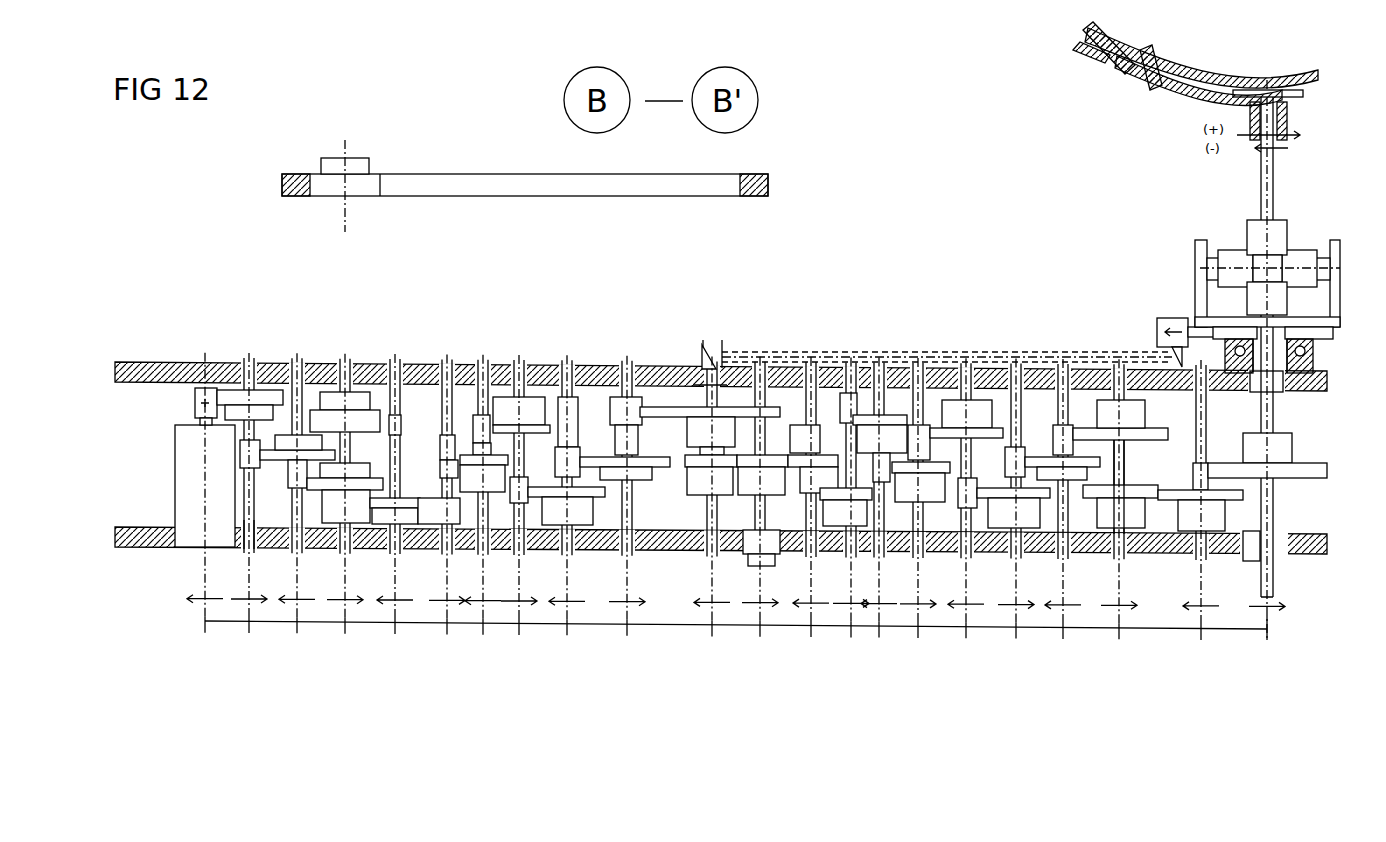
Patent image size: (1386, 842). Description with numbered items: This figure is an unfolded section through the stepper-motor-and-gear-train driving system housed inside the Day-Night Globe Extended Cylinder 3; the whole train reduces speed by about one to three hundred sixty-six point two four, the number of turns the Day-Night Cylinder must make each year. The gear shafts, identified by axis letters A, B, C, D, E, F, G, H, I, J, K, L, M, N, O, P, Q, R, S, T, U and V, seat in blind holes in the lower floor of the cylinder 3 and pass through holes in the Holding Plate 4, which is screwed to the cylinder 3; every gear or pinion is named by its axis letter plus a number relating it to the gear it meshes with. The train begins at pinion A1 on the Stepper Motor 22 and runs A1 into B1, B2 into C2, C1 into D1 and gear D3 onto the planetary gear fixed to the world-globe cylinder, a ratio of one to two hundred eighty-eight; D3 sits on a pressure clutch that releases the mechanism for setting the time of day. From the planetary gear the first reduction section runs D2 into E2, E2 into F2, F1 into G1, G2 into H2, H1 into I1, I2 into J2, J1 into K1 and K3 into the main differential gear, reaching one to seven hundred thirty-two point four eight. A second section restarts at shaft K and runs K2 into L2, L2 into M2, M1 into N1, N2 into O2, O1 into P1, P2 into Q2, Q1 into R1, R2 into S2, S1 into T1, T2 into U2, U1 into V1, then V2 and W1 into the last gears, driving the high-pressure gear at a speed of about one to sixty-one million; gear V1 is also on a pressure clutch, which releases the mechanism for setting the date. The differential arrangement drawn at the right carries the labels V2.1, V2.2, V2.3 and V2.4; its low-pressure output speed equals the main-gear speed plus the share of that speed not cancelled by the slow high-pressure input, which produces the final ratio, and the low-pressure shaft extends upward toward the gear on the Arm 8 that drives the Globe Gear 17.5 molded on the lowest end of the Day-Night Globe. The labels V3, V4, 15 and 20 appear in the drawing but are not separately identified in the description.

The Day-Night Globe Extended Cylinder 3 is at (165, 527).
The Holding Plate 4 is at (155, 362).
The Arm 8 is at (1085, 92).
The ring end piece 15 is at (1100, 32).
The Globe Gear 17.5 is at (1090, 50).
The coupling 20 is at (700, 346).
The Stepper Motor 22 is at (175, 483).
The pinion A1 is at (197, 390).
The gear B1 is at (228, 392).
The gear B2 is at (197, 549).
The gear C1 is at (292, 549).
The gear C2 is at (247, 549).
The gear D1 is at (330, 549).
The gear D2 is at (360, 547).
The gear D3 is at (320, 196).
The gear E2 is at (402, 549).
The gear F1 is at (430, 497).
The gear F2 is at (395, 415).
The gear G1 is at (448, 549).
The gear G2 is at (442, 433).
The gear H1 is at (510, 549).
The gear H2 is at (475, 415).
The gear I1 is at (550, 550).
The gear I2 is at (515, 398).
The gear J1 is at (617, 397).
The gear J2 is at (563, 398).
The gear K1 is at (690, 408).
The gear K2 is at (663, 551).
The gear K3 is at (1172, 318).
The gear L2 is at (733, 551).
The gear M1 is at (792, 552).
The gear M2 is at (795, 425).
The gear N1 is at (837, 552).
The gear N2 is at (845, 394).
The gear O1 is at (872, 552).
The gear O2 is at (862, 425).
The gear P1 is at (918, 552).
The gear P2 is at (912, 425).
The gear Q1 is at (960, 554).
The gear Q2 is at (948, 400).
The gear R1 is at (1005, 554).
The gear R2 is at (1008, 447).
The gear S1 is at (1056, 425).
The gear S2 is at (1052, 554).
The gear T1 is at (1100, 400).
The gear T2 is at (1103, 554).
The gear U1 is at (1195, 462).
The gear U2 is at (1177, 554).
The gear V1 is at (1232, 555).
The gear V2 is at (1196, 305).
The joint right arm V2.1 is at (1300, 250).
The low pressure gear V2.2 is at (1277, 252).
The joint left arm V2.3 is at (1242, 243).
The high pressure gear V2.4 is at (1262, 305).
The top plate of shaft V V3 is at (1303, 92).
The cover bar V4 is at (553, 175).
The gear W1 is at (1175, 98).
The gear axis A is at (205, 509).
The gear axis B is at (249, 509).
The gear axis C is at (297, 509).
The gear axis D is at (345, 510).
The gear axis E is at (395, 510).
The gear axis F is at (447, 510).
The gear axis G is at (483, 511).
The gear axis H is at (519, 511).
The gear axis I is at (567, 511).
The gear axis J is at (627, 512).
The gear shaft K is at (712, 512).
The gear axis L is at (760, 513).
The gear axis M is at (811, 513).
The gear axis N is at (851, 513).
The gear axis O is at (879, 514).
The gear axis P is at (918, 514).
The gear axis Q is at (966, 514).
The gear axis R is at (1016, 515).
The gear axis S is at (1063, 515).
The gear axis T is at (1119, 515).
The gear axis U is at (1201, 516).
The gear axis V is at (1267, 637).